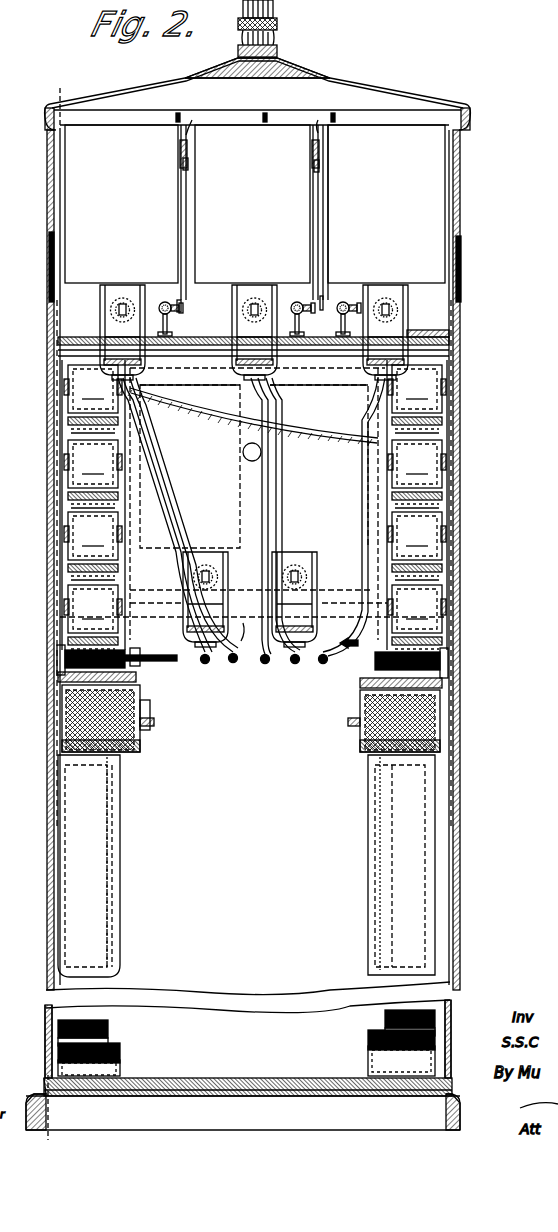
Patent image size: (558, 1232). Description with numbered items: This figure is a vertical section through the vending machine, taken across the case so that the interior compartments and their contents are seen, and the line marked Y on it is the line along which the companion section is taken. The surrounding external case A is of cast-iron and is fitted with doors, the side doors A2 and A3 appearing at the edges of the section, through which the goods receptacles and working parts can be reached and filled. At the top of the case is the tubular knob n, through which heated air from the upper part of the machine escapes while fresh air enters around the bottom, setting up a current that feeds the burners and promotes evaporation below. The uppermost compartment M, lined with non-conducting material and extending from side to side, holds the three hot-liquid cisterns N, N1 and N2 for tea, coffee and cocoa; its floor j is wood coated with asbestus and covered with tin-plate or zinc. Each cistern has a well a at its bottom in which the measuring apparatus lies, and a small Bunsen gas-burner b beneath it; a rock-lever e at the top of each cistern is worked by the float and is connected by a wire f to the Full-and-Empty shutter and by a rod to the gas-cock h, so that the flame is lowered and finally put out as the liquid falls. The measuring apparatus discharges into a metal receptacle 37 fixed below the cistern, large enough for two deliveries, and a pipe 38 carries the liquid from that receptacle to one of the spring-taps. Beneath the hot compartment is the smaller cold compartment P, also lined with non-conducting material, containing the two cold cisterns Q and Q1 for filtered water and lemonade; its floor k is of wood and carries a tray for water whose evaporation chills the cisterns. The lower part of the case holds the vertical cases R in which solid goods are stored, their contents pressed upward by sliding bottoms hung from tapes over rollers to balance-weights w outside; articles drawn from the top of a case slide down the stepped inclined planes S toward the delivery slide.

The metal receptacle 37 is at (254, 466).
The pipe 38 is at (155, 505).
The tubular knob n is at (264, 28).
The external case A is at (46, 890).
The side door A2 is at (462, 281).
The side door A3 is at (48, 248).
The section line Y is at (50, 609).
The rock-lever e is at (255, 116).
The hot-liquid cistern N is at (121, 204).
The hot-liquid cistern N1 is at (252, 204).
The hot-liquid cistern N2 is at (386, 204).
The wire f is at (190, 208).
The Bunsen gas-burner b is at (256, 312).
The gas-cock h is at (250, 314).
The uppermost compartment M is at (205, 301).
The well a is at (100, 297).
The floor of hot compartment j is at (419, 340).
The inclined planes S is at (254, 506).
The cold compartment P is at (257, 370).
The cold-liquid cistern Q is at (190, 466).
The cold-liquid cistern Q1 is at (319, 466).
The floor of cold compartment k is at (250, 625).
The vertical case R is at (249, 880).
The balance-weight w is at (140, 756).